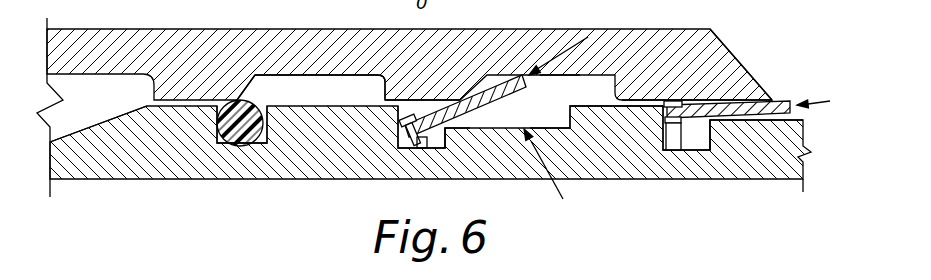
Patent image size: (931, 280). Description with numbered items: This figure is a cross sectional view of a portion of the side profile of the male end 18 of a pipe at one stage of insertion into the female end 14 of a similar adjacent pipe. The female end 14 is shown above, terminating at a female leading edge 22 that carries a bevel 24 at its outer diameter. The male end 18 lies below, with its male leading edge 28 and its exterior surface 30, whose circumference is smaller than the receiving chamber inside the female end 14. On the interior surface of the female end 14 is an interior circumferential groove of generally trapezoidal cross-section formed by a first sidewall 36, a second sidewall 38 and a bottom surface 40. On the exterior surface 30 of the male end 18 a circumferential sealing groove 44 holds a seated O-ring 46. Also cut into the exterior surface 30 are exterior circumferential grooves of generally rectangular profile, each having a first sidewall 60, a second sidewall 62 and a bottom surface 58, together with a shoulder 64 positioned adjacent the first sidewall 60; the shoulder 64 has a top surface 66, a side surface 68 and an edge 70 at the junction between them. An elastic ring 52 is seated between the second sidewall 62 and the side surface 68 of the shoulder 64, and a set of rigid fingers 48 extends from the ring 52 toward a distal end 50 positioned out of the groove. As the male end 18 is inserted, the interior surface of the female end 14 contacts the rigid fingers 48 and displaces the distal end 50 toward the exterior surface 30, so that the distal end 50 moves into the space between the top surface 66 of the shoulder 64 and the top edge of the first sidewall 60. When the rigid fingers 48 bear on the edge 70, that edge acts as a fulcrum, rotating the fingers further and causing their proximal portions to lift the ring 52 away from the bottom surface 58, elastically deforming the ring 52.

The female end 14 is at (134, 66).
The male end 18 is at (138, 160).
The female leading edge 22 is at (773, 98).
The bevel 24 is at (740, 63).
The male leading edge 28 is at (91, 126).
The exterior surface 30 is at (582, 105).
The first sidewall 36 is at (384, 87).
The second sidewall 38 is at (257, 77).
The bottom surface 40 is at (338, 76).
The circumferential sealing groove 44 is at (227, 145).
The O-ring 46 is at (254, 141).
The rigid fingers 48 is at (478, 108).
The distal end 50 is at (690, 63).
The ring 52 is at (416, 150).
The bottom surface 58 is at (445, 149).
The first sidewall 60 is at (560, 108).
The second sidewall 62 is at (417, 100).
The shoulder 64 is at (548, 175).
The top surface 66 is at (553, 127).
The side surface 68 is at (448, 130).
The edge 70 is at (713, 123).